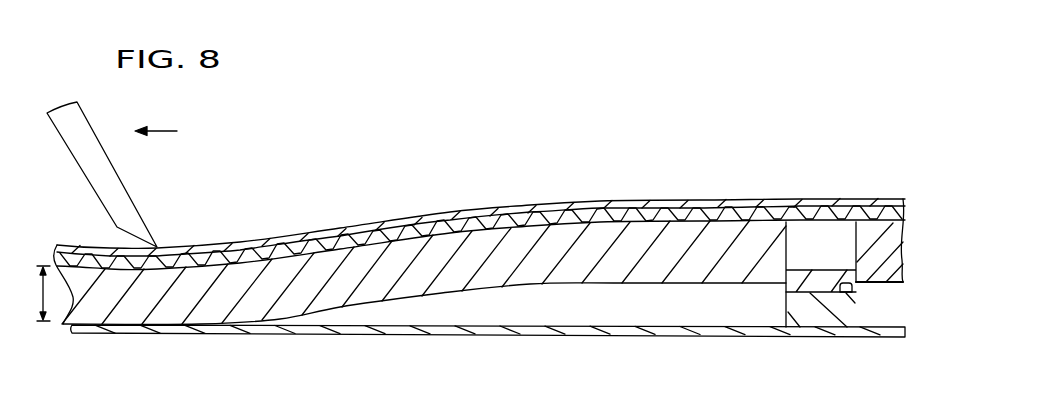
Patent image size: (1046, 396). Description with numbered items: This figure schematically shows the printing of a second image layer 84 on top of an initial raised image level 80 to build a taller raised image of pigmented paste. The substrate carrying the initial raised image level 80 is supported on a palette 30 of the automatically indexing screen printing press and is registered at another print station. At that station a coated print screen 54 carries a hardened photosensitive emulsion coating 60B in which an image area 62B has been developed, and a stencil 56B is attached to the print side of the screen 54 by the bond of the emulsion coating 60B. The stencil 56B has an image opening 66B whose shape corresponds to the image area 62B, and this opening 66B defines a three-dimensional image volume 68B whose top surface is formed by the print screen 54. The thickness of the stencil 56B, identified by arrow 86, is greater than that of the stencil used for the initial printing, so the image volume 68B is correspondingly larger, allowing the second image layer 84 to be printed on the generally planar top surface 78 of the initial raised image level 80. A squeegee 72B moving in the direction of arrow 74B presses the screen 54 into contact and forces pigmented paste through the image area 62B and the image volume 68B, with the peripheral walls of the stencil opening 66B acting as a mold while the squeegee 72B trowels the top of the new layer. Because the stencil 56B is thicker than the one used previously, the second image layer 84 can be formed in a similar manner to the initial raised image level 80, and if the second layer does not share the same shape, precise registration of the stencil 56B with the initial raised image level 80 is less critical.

The palette 30 is at (497, 360).
The print screen 54 is at (902, 216).
The stencil 56B is at (875, 300).
The hardened photosensitive emulsion coating 60B is at (865, 203).
The image area 62B is at (803, 204).
The image opening 66B is at (761, 204).
The image volume 68B is at (822, 253).
The squeegee 72B is at (122, 192).
The arrow 74B is at (176, 131).
The top surface 78 is at (852, 288).
The initial raised image level 80 is at (787, 321).
The second image layer 84 is at (807, 279).
The thickness 86 is at (51, 294).